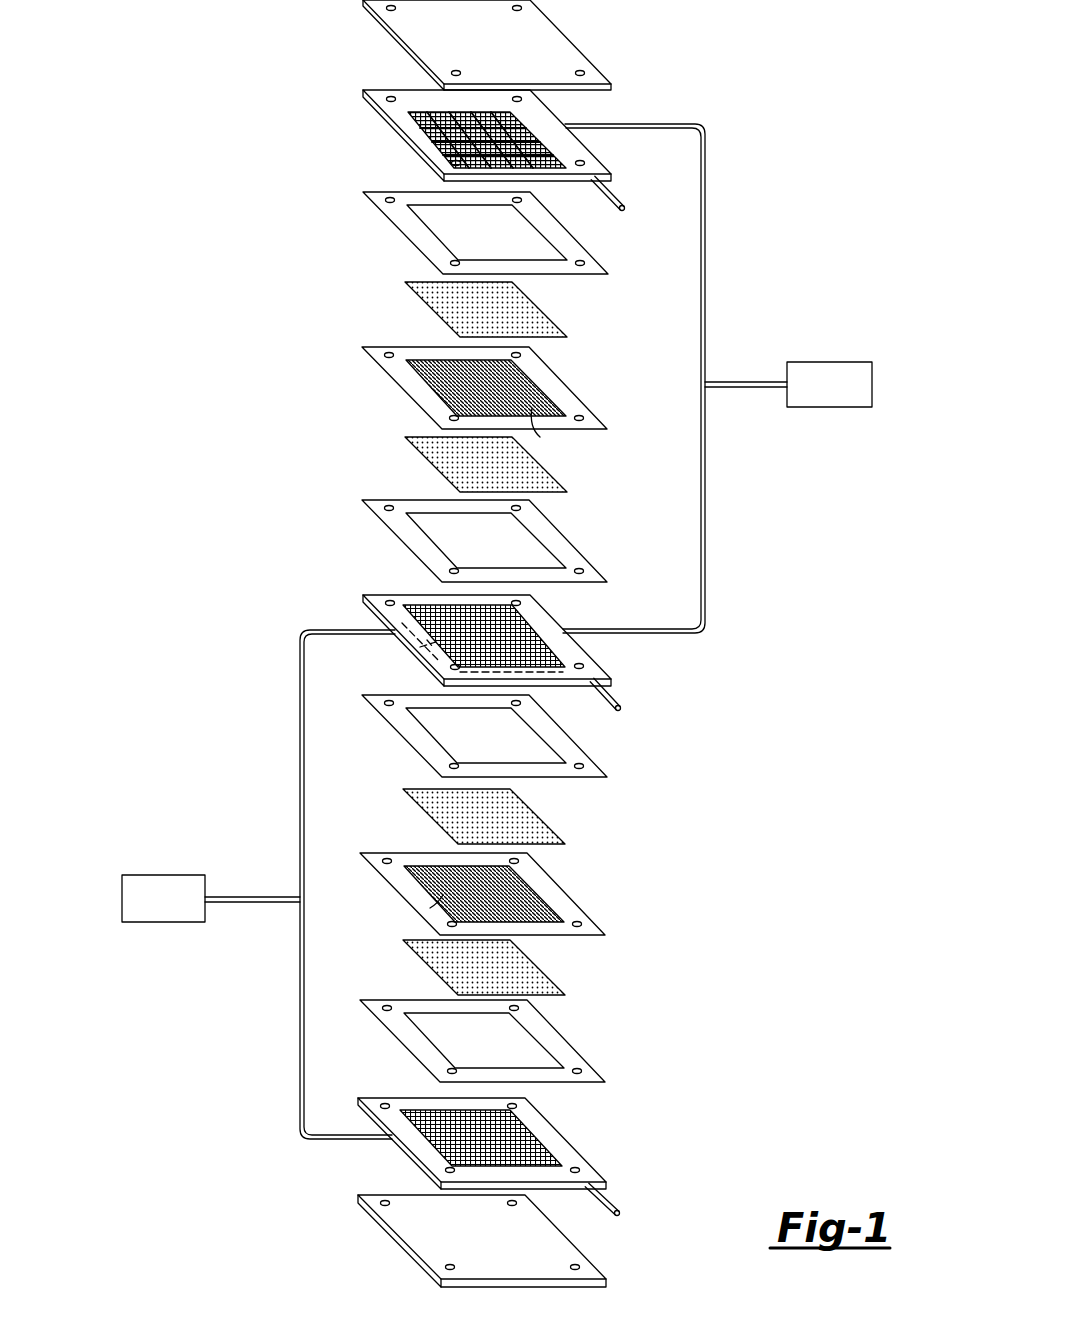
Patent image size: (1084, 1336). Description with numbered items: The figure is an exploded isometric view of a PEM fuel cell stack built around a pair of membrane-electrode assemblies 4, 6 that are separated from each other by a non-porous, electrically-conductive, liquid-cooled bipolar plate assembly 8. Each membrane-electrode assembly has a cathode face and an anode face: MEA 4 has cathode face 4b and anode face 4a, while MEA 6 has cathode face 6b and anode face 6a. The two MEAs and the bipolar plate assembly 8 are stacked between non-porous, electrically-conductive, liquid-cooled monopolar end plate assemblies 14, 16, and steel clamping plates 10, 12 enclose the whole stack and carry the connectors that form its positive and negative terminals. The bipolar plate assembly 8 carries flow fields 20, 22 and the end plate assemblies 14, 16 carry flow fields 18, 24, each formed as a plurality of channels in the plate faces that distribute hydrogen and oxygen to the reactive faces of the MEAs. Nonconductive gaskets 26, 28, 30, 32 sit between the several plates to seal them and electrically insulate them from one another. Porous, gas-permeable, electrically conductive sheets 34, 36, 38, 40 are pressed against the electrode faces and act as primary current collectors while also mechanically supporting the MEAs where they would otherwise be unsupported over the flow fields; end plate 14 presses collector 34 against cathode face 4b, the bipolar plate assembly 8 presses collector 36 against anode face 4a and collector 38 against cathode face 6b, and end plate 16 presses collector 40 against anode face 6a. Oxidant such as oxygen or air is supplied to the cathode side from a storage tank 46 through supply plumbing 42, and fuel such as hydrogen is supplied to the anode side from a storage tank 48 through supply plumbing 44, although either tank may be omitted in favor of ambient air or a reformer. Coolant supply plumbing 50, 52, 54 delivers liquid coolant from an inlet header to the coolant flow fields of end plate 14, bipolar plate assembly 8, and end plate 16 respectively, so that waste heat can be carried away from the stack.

The clamping plate 10 is at (393, 37).
The monopolar end plate assembly 14 is at (474, 150).
The flow field 18 is at (420, 148).
The coolant supply plumbing 50 is at (625, 200).
The gasket 26 is at (413, 228).
The primary current collector 34 is at (437, 305).
The membrane-electrode assembly 4 is at (458, 403).
The cathode face 4b is at (522, 385).
The anode face 4a is at (540, 437).
The primary current collector 36 is at (432, 458).
The gasket 28 is at (413, 535).
The bipolar plate assembly 8 is at (480, 651).
The flow field 20 is at (518, 622).
The flow field 22 is at (420, 663).
The coolant supply plumbing 52 is at (625, 702).
The gasket 30 is at (572, 748).
The primary current collector 38 is at (525, 805).
The membrane-electrode assembly 6 is at (493, 879).
The cathode face 6b is at (423, 867).
The anode face 6a is at (430, 908).
The primary current collector 40 is at (525, 958).
The gasket 32 is at (563, 1045).
The monopolar end plate assembly 16 is at (515, 1157).
The flow field 24 is at (543, 1150).
The coolant supply plumbing 54 is at (623, 1206).
The clamping plate 12 is at (590, 1244).
The supply plumbing 42 is at (706, 506).
The supply plumbing 44 is at (300, 1003).
The storage tank 46 is at (850, 362).
The storage tank 48 is at (143, 875).